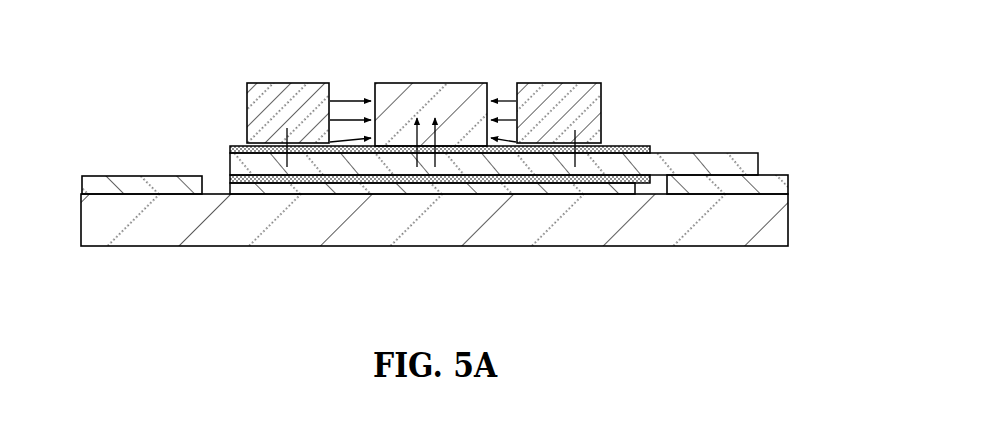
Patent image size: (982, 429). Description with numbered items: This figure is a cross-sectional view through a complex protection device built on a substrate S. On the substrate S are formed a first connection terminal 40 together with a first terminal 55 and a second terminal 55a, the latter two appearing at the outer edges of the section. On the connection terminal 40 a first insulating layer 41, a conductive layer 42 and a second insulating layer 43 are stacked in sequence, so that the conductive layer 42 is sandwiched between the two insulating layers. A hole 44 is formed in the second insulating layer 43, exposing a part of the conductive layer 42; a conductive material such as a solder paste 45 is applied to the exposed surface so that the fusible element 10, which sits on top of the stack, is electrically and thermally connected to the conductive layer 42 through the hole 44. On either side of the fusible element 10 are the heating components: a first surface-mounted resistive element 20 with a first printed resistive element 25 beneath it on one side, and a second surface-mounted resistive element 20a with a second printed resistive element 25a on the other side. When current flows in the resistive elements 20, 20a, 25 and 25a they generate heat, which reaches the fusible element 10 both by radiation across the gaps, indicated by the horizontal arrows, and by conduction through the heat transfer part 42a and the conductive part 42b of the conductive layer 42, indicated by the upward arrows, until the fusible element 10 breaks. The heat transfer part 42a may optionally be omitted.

The fusible element 10 is at (463, 82).
The first surface-mounted resistive element 20 is at (565, 82).
The second surface-mounted resistive element 20a is at (268, 82).
The first printed resistive element 25 is at (598, 146).
The second printed resistive element 25a is at (248, 146).
The first connection terminal 40 is at (531, 188).
The first insulating layer 41 is at (612, 180).
The conductive layer 42 is at (713, 151).
The heat transfer part 42a is at (240, 160).
The conductive part 42b is at (748, 162).
The second insulating layer 43 is at (660, 158).
The hole 44 is at (497, 151).
The solder paste 45 is at (410, 155).
The first terminal 55 is at (783, 187).
The second terminal 55a is at (90, 190).
The substrate S is at (727, 222).